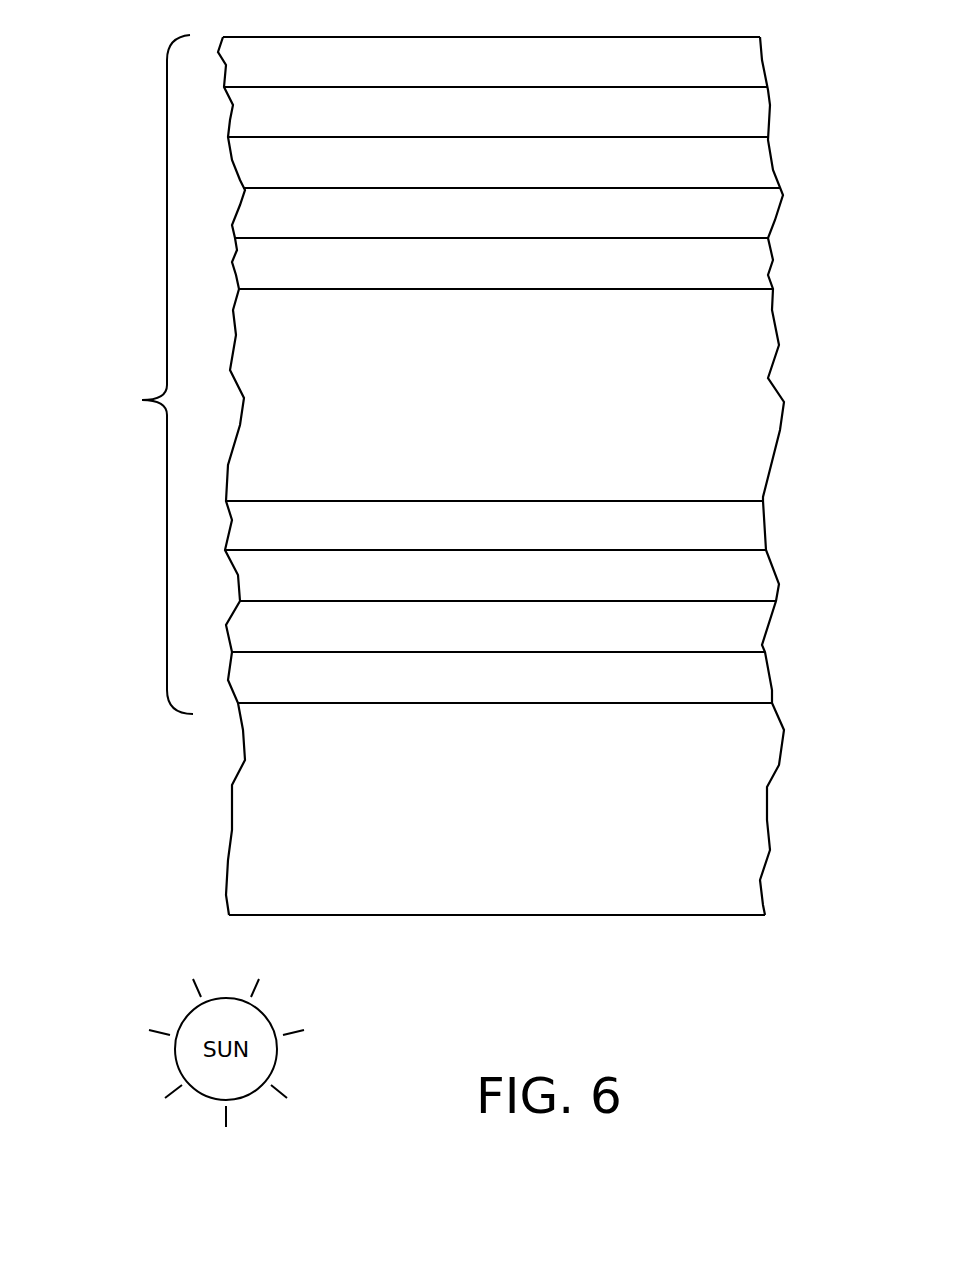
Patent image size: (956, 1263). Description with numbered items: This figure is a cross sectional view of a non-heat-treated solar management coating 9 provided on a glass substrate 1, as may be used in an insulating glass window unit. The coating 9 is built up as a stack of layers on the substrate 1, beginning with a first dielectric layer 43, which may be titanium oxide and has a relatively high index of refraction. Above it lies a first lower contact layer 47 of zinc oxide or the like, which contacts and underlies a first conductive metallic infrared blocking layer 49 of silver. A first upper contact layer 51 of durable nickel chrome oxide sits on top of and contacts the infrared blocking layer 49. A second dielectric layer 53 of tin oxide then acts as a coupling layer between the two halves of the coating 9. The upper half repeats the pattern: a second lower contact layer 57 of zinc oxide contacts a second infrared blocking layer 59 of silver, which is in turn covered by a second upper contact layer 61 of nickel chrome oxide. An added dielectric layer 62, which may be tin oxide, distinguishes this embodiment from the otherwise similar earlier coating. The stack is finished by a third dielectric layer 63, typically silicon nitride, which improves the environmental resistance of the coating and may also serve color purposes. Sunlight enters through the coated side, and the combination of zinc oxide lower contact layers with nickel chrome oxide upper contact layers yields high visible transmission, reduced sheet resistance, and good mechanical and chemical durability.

The third dielectric layer 63 is at (733, 55).
The dielectric layer 62 is at (728, 97).
The second upper contact layer 61 is at (745, 163).
The second IR blocking layer 59 is at (757, 217).
The second lower contact layer 57 is at (730, 270).
The second dielectric layer 53 is at (730, 398).
The first upper contact layer 51 is at (742, 510).
The first IR blocking layer 49 is at (757, 578).
The first lower contact layer 47 is at (757, 625).
The first dielectric layer 43 is at (750, 678).
The glass substrate 1 is at (737, 812).
The solar management coating 9 is at (101, 374).